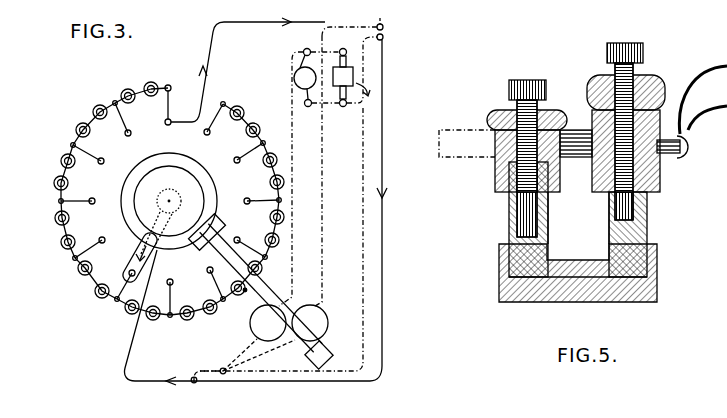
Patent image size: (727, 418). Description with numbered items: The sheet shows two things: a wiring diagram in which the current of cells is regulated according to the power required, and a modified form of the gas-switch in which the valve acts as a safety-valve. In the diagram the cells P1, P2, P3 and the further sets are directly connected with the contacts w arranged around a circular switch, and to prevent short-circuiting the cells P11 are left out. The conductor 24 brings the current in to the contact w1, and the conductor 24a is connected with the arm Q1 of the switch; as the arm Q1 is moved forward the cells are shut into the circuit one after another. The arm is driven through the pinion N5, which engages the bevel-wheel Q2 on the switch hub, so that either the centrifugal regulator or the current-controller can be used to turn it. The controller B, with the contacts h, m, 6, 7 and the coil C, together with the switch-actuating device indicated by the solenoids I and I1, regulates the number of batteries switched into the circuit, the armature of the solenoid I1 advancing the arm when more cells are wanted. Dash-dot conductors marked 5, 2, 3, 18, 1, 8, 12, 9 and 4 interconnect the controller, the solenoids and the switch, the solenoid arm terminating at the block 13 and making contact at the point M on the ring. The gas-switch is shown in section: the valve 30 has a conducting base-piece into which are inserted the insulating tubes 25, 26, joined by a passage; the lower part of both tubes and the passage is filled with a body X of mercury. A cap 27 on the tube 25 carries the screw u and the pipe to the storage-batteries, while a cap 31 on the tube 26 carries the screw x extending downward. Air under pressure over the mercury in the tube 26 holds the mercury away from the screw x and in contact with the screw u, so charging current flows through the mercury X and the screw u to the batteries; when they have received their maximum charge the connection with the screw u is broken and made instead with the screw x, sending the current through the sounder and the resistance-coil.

In FIG. 3, the cells P1 is at (139, 85).
In FIG. 3, the cells P2 is at (89, 117).
In FIG. 3, the set of batteries P3 is at (57, 172).
In FIG. 3, the cells P11 is at (248, 121).
In FIG. 3, the contact w is at (120, 122).
In FIG. 5, the contact w is at (672, 160).
In FIG. 3, the contact w1 is at (159, 110).
In FIG. 5, the contact w1 is at (703, 100).
In FIG. 3, the conductor 24 is at (248, 64).
In FIG. 3, the conductor 24a is at (294, 251).
In FIG. 3, the contact h is at (305, 50).
In FIG. 3, the coil C is at (305, 78).
In FIG. 3, the contact m is at (304, 105).
In FIG. 3, the contact 6 is at (329, 44).
In FIG. 3, the controller B is at (343, 76).
In FIG. 3, the terminal 5 is at (350, 56).
In FIG. 3, the terminal 2 is at (353, 82).
In FIG. 3, the conductor 3 is at (365, 94).
In FIG. 3, the contact 7 is at (330, 112).
In FIG. 3, the terminal 18 is at (361, 27).
In FIG. 3, the terminal 1 is at (257, 209).
In FIG. 3, the bevel-wheel Q2 is at (203, 167).
In FIG. 3, the pinion N5 is at (252, 278).
In FIG. 3, the arm end block 13 is at (278, 355).
In FIG. 3, the arm Q1 is at (139, 256).
In FIG. 3, the contact point M is at (248, 288).
In FIG. 3, the switch-actuating device I is at (268, 323).
In FIG. 3, the solenoid I1 is at (310, 323).
In FIG. 3, the conductor 8 is at (291, 179).
In FIG. 3, the conductor 12 is at (326, 173).
In FIG. 3, the conductor 9 is at (238, 349).
In FIG. 3, the conductor / bar 4 is at (194, 383).
In FIG. 5, the conductor / bar 4 is at (559, 151).
In FIG. 5, the valve 30 is at (578, 273).
In FIG. 5, the body of mercury X is at (560, 219).
In FIG. 5, the cap 31 is at (500, 164).
In FIG. 5, the cap 27 is at (668, 188).
In FIG. 5, the tube 26 is at (557, 218).
In FIG. 5, the tube 25 is at (601, 218).
In FIG. 5, the screw u is at (651, 206).